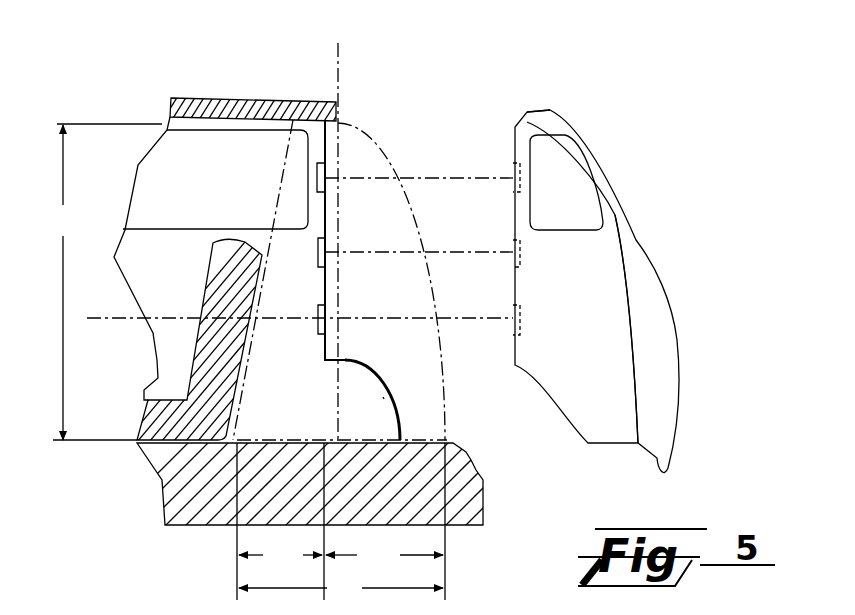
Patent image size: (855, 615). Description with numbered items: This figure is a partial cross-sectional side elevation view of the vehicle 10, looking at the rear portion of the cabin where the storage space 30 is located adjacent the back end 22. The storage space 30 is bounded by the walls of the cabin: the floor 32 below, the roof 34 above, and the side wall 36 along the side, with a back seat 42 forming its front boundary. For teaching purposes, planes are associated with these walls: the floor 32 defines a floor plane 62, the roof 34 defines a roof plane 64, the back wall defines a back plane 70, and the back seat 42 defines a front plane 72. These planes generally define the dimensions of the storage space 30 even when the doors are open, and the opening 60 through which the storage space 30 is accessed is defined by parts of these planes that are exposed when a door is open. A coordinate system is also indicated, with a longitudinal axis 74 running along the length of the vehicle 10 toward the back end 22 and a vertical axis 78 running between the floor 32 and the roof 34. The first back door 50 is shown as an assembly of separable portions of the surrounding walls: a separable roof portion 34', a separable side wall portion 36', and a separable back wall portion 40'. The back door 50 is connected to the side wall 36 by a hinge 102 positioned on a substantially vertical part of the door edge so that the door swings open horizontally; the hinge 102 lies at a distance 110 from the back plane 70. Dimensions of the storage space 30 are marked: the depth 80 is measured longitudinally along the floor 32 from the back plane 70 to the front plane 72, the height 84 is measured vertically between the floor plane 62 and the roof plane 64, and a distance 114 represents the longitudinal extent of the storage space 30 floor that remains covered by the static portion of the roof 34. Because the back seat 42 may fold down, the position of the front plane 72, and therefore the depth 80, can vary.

The vehicle 10 is at (665, 107).
The back end 22 is at (715, 350).
The storage space 30 is at (408, 241).
The floor 32 is at (298, 440).
The roof 34 is at (246, 78).
The separable roof portion 34' is at (511, 91).
The side wall 36 is at (307, 240).
The separable side wall portion 36' is at (597, 291).
The separable back wall portion 40' is at (677, 345).
The back seat 42 is at (240, 372).
The first back door 50 is at (682, 262).
The opening 60 is at (445, 276).
The floor plane 62 is at (383, 397).
The roof plane 64 is at (290, 120).
The back plane 70 is at (387, 150).
The front plane 72 is at (280, 197).
The longitudinal axis 74 is at (108, 318).
The vertical axis 78 is at (340, 218).
The depth 80 is at (341, 589).
The height 84 is at (105, 282).
The hinge 102 is at (320, 176).
The distance 110 is at (385, 521).
The distance 114 is at (280, 521).